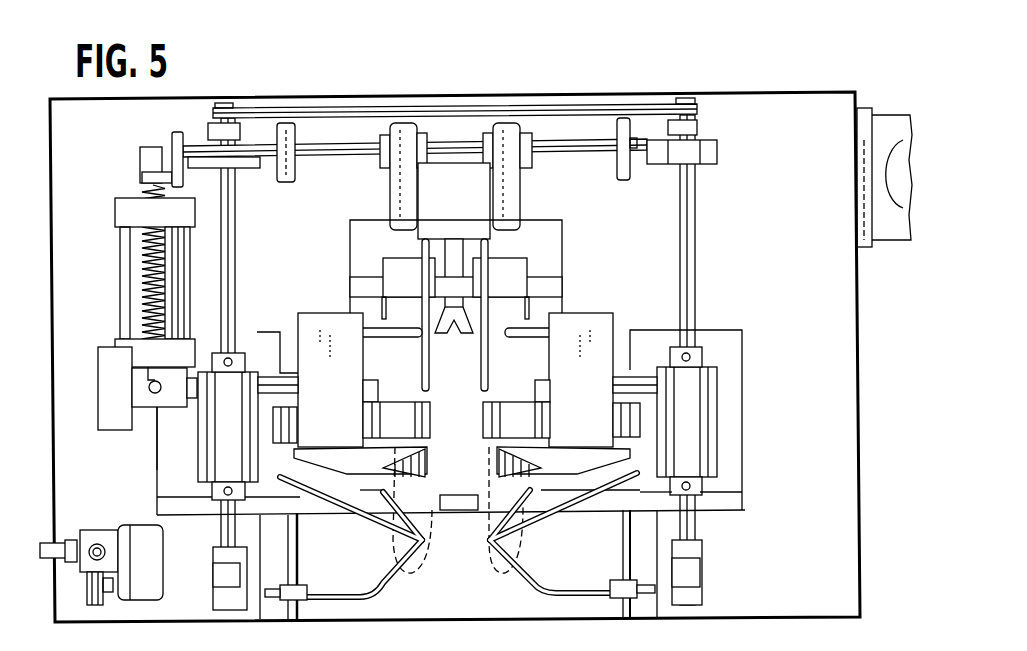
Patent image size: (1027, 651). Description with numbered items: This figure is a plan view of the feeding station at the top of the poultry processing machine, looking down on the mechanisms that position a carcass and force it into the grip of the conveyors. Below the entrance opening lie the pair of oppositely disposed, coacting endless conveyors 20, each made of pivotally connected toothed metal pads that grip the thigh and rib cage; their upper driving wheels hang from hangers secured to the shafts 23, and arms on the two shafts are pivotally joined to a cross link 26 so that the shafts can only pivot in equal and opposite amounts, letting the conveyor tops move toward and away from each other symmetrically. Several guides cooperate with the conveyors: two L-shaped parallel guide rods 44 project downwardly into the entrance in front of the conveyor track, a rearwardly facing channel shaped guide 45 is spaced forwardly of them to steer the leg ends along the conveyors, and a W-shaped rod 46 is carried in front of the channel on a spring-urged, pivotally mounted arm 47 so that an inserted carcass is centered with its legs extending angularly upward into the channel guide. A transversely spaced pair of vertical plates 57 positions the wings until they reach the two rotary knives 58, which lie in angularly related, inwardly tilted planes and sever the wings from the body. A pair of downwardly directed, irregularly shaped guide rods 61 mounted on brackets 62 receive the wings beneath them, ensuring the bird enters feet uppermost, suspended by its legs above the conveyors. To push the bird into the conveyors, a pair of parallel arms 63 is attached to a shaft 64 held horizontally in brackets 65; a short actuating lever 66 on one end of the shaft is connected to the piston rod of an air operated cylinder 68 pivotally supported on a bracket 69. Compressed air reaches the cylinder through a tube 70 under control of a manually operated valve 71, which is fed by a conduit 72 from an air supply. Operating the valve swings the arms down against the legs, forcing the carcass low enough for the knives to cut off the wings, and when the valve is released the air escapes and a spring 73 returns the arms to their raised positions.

The endless conveyors 20 is at (484, 424).
The shafts 23 is at (236, 293).
The cross link 26 is at (374, 104).
The guide rods 44 is at (481, 356).
The channel shaped guide 45 is at (518, 272).
The W-shaped rod 46 is at (340, 318).
The arm 47 is at (454, 250).
The vertical plates 57 is at (335, 465).
The rotary knives 58 is at (487, 517).
The guide rods 61 is at (380, 585).
The brackets 62 is at (299, 535).
The parallel arms 63 is at (502, 142).
The shaft 64 is at (348, 160).
The brackets 65 is at (288, 184).
The actuating lever 66 is at (172, 140).
The air operated cylinder 68 is at (138, 287).
The bracket 69 is at (120, 387).
The tube 70 is at (98, 543).
The valve 71 is at (86, 590).
The conduit 72 is at (50, 543).
The spring 73 is at (150, 258).